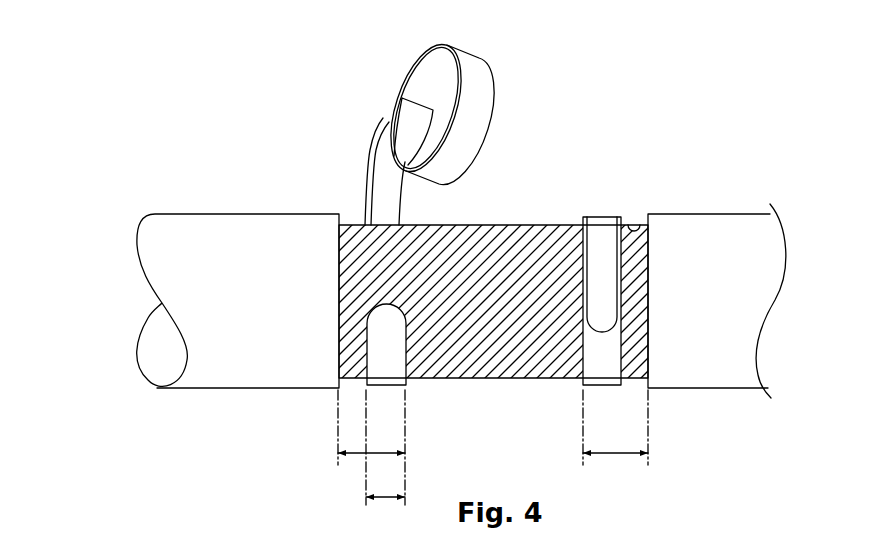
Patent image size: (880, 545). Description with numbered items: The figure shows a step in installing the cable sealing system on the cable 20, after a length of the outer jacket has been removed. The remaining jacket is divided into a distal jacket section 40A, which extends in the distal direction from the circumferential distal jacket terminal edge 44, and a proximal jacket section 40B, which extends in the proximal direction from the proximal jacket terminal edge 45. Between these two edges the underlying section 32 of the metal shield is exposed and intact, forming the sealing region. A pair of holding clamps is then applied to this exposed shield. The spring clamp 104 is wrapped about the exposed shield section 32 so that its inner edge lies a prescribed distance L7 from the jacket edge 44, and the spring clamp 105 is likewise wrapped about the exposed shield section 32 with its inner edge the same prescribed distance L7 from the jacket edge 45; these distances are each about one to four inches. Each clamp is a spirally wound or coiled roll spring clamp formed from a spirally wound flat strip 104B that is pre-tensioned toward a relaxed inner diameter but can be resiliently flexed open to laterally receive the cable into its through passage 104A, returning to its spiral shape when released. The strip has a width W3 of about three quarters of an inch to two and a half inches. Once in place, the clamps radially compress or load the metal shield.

The cable 20 is at (419, 239).
The exposed shield section 32 is at (498, 372).
The distal jacket section 40A is at (263, 375).
The proximal jacket section 40B is at (710, 372).
The distal jacket terminal edge 44 is at (358, 224).
The proximal jacket terminal edge 45 is at (634, 232).
The spring clamp 104 is at (380, 130).
The through passage 104A is at (573, 279).
The spirally wound flat strip 104B is at (382, 165).
The spring clamp 105 is at (608, 238).
The prescribed distance L7 is at (355, 456).
The width of strip W3 is at (380, 498).